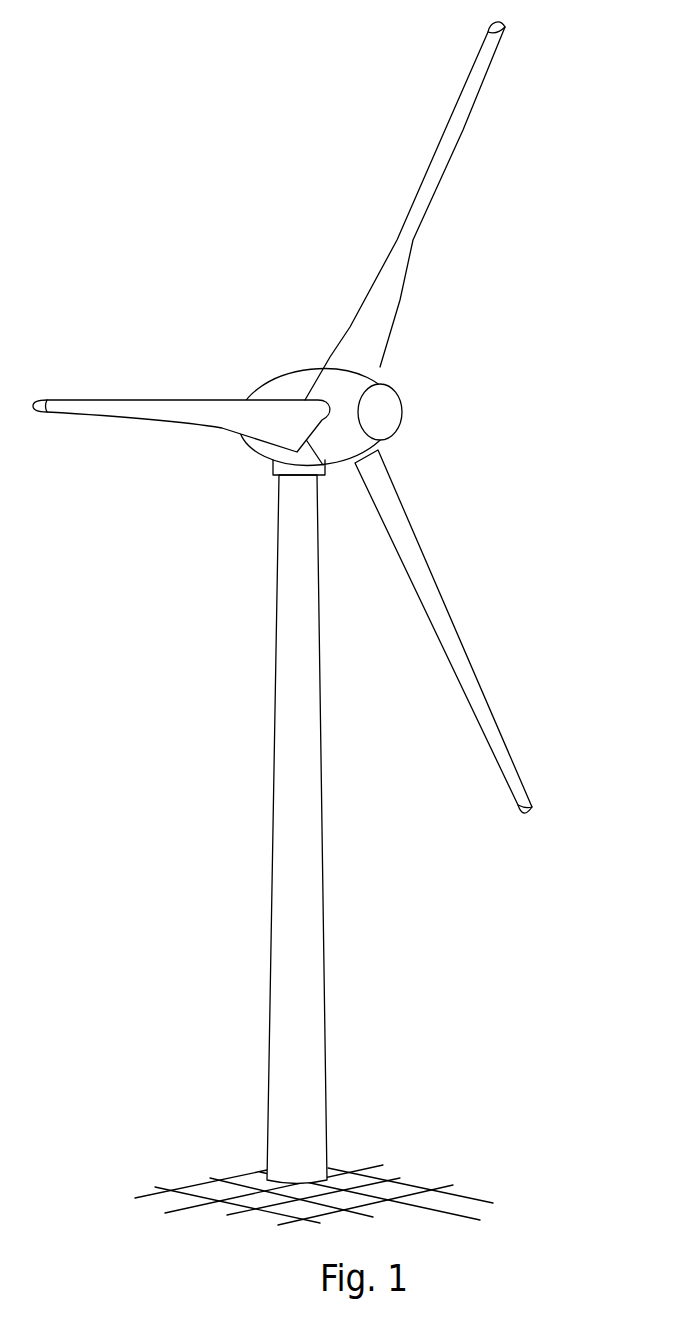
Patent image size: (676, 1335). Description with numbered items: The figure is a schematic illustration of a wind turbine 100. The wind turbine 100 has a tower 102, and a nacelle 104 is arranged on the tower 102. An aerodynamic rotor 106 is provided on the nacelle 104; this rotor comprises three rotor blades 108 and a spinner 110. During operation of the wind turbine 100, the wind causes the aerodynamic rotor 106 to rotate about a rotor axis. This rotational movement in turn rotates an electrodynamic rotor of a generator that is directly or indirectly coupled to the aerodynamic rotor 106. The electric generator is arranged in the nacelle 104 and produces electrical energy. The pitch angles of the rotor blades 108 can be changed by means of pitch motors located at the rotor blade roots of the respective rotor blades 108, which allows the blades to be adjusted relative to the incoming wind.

The wind turbine 100 is at (232, 548).
The tower 102 is at (310, 910).
The nacelle 104 is at (293, 390).
The aerodynamic rotor 106 is at (472, 332).
The rotor blades 108 is at (124, 407).
The spinner 110 is at (383, 413).